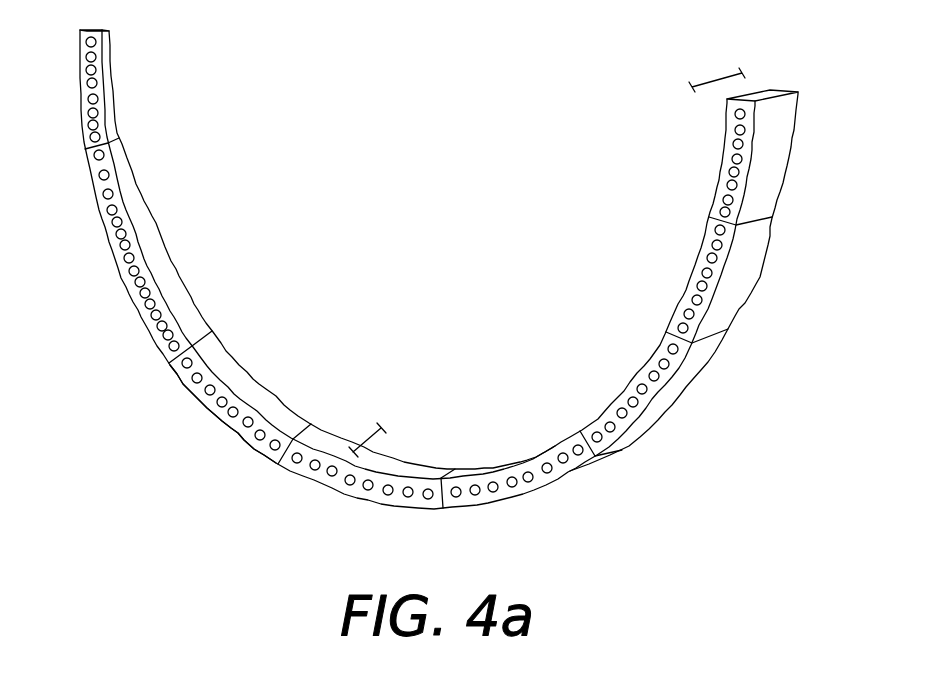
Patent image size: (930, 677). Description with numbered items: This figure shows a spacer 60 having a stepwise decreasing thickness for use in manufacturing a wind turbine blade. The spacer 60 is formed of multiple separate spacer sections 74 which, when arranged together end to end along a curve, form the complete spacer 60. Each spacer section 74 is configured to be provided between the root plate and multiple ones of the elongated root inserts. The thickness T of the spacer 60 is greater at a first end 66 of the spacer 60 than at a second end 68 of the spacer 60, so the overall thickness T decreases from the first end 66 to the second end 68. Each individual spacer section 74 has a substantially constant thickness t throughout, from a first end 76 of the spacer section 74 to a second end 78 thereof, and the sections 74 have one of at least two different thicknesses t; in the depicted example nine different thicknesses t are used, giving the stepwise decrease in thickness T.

The spacer 60 is at (131, 427).
The first end 66 is at (697, 118).
The second end 68 is at (126, 40).
The spacer section 74 is at (214, 356).
The first end of the spacer section 76 is at (441, 461).
The second end of the spacer section 78 is at (316, 426).
The thickness of the spacer T is at (722, 74).
The thickness of the spacer section t is at (368, 430).